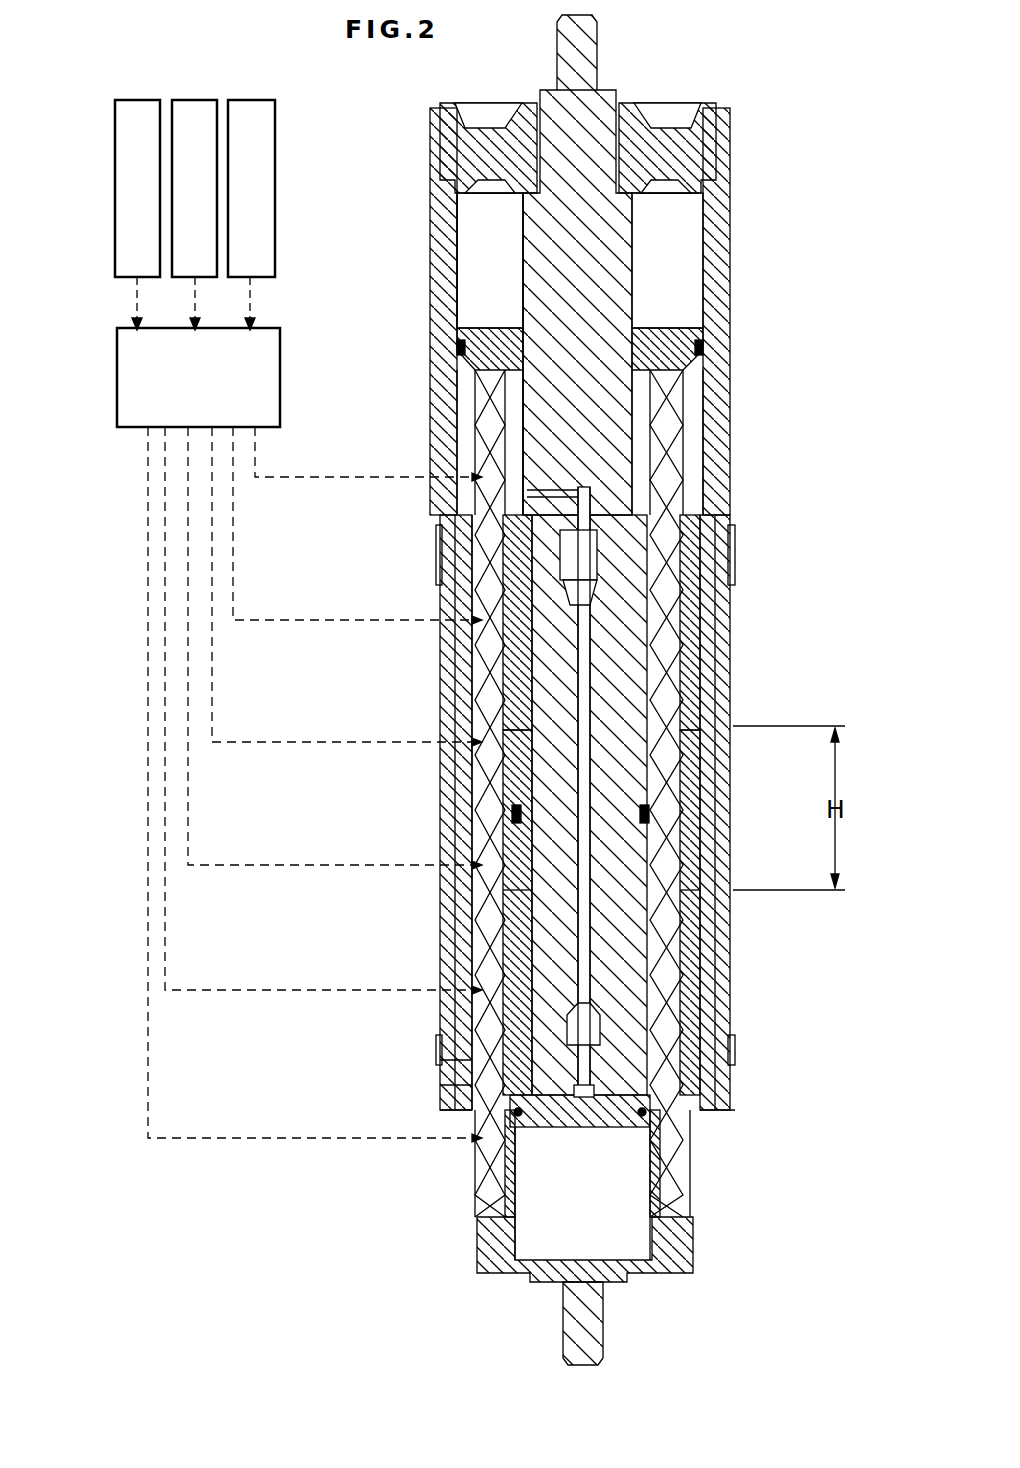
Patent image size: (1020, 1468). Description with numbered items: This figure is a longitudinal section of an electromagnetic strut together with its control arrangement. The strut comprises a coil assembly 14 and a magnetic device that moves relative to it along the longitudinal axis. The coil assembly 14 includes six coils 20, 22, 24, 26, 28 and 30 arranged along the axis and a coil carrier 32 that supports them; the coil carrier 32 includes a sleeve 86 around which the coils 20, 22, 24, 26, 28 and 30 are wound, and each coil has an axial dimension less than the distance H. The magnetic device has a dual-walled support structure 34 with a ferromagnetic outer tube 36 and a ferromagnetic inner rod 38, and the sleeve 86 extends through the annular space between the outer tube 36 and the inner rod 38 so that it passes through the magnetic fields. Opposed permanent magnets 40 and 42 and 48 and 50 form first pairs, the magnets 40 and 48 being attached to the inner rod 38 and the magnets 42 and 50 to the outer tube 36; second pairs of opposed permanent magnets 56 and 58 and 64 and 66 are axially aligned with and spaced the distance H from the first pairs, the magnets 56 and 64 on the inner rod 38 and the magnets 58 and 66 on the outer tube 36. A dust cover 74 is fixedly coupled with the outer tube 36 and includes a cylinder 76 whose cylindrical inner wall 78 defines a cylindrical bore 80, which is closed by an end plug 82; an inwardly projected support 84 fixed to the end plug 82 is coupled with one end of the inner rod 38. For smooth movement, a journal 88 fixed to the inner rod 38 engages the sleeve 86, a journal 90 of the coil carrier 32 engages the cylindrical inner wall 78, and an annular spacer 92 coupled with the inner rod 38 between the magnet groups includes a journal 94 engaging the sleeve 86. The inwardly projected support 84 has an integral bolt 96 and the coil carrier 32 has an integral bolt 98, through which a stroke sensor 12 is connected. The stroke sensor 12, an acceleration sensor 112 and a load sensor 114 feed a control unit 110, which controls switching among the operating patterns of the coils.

The stroke sensor 12 is at (138, 102).
The acceleration sensor 112 is at (196, 102).
The load sensor 114 is at (258, 102).
The control unit 110 is at (124, 400).
The integral bolt 96 is at (585, 48).
The end plug 82 is at (488, 140).
The cylindrical bore 80 is at (500, 248).
The inwardly projected support 84 is at (620, 245).
The dust cover 74 is at (462, 290).
The cylindrical inner wall 78 is at (712, 283).
The journal 90 is at (705, 348).
The cylinder 76 is at (725, 385).
The sleeve 86 is at (528, 395).
The coil 20 is at (470, 447).
The coil 22 is at (470, 578).
The coil 24 is at (468, 700).
The coil 26 is at (470, 912).
The coil 28 is at (485, 1000).
The coil 30 is at (490, 1175).
The permanent magnet 48 is at (470, 520).
The permanent magnet 50 is at (462, 650).
The permanent magnet 64 is at (522, 945).
The permanent magnet 40 is at (640, 510).
The permanent magnet 42 is at (700, 545).
The dual-walled support structure 34 is at (735, 620).
The outer tube 36 is at (722, 932).
The annular spacer 92 is at (735, 742).
The journal 94 is at (660, 818).
The inner rod 38 is at (622, 845).
The permanent magnet 58 is at (702, 1092).
The permanent magnet 56 is at (655, 1082).
The journal 88 is at (652, 1115).
The permanent magnet 66 is at (462, 1072).
The coil assembly 14 is at (695, 1232).
The coil carrier 32 is at (480, 1240).
The integral bolt 98 is at (603, 1332).